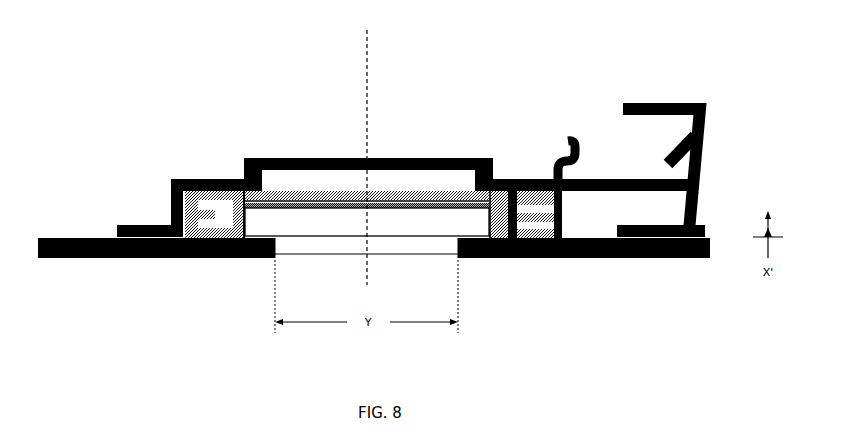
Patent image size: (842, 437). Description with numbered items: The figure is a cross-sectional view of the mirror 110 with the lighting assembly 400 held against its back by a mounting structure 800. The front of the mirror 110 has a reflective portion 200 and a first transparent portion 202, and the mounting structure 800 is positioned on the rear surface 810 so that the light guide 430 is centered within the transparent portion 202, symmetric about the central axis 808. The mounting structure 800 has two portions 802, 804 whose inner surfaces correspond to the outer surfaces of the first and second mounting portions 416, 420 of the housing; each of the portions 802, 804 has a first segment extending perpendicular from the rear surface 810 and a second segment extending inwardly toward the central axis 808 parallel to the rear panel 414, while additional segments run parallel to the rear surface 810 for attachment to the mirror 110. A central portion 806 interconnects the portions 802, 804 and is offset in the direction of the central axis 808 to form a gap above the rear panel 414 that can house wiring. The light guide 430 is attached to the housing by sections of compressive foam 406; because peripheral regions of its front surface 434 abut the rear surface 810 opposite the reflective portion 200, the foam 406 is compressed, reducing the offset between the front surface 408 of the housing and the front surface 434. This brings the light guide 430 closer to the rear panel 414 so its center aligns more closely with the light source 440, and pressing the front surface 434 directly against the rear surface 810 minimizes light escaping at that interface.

The mirror 110 is at (118, 258).
The reflective portion 200 is at (615, 262).
The first transparent portion 202 is at (391, 262).
The lighting assembly 400 is at (368, 163).
The compressive foam 406 is at (245, 177).
The front surface of the housing 408 is at (543, 257).
The rear panel 414 is at (322, 193).
The first mounting portion 416 is at (214, 236).
The second mounting portion 420 is at (528, 238).
The light guide 430 is at (425, 213).
The front surface of the light guide 434 is at (330, 240).
The light source 440 is at (502, 238).
The mounting structure 800 is at (134, 195).
The portion of the mounting structure 802 is at (174, 198).
The portion of the mounting structure 804 is at (530, 175).
The central portion 806 is at (290, 157).
The central axis 808 is at (370, 63).
The rear surface of the mirror 810 is at (88, 238).